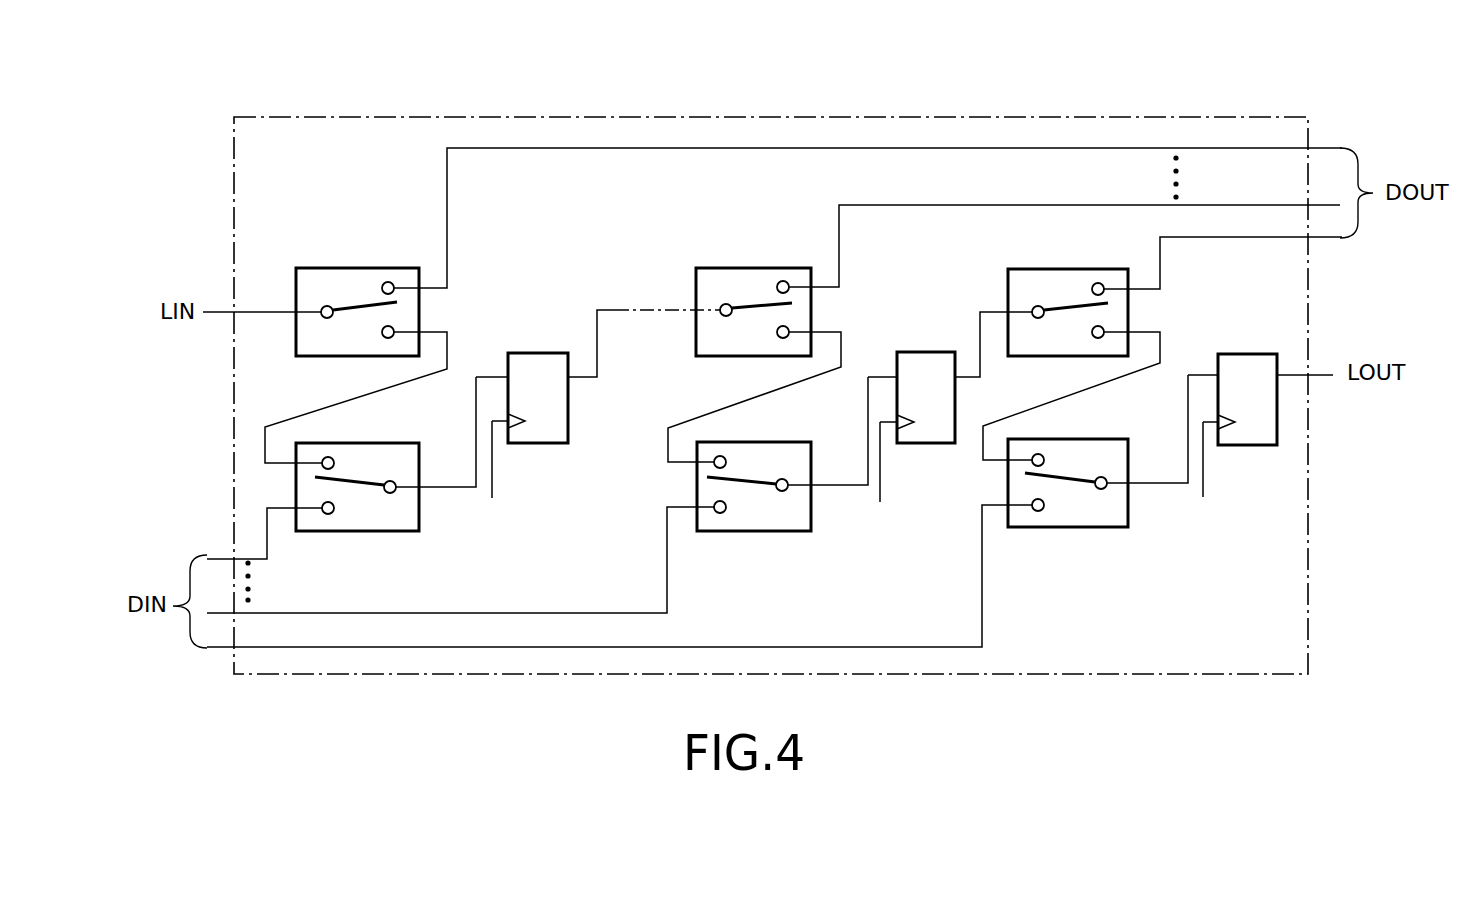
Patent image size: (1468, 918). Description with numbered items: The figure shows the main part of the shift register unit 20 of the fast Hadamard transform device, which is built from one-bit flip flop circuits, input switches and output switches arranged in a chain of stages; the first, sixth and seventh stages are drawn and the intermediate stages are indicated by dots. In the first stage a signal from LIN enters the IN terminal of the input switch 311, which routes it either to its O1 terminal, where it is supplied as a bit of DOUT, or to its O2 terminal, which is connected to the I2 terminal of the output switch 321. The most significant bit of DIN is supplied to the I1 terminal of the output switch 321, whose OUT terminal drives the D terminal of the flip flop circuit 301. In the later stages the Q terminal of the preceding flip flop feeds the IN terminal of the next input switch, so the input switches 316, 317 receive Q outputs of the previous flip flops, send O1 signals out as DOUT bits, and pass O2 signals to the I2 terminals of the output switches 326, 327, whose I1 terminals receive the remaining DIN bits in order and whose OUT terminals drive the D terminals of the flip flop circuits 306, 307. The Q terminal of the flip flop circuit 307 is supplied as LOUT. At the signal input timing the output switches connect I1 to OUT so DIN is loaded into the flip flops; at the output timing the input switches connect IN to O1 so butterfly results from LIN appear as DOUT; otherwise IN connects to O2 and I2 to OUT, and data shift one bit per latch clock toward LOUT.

The shift register unit 20 is at (1272, 113).
The input switch 311 is at (375, 268).
The input switch 316 is at (792, 268).
The input switch 317 is at (1085, 269).
The output switch 321 is at (387, 443).
The output switch 326 is at (778, 442).
The output switch 327 is at (1095, 439).
The flip flop circuit 301 is at (540, 353).
The flip flop circuit 306 is at (930, 352).
The flip flop circuit 307 is at (1250, 354).